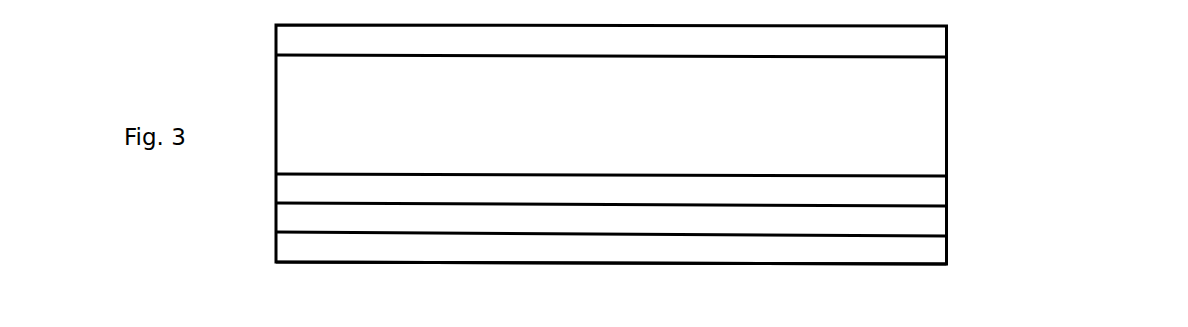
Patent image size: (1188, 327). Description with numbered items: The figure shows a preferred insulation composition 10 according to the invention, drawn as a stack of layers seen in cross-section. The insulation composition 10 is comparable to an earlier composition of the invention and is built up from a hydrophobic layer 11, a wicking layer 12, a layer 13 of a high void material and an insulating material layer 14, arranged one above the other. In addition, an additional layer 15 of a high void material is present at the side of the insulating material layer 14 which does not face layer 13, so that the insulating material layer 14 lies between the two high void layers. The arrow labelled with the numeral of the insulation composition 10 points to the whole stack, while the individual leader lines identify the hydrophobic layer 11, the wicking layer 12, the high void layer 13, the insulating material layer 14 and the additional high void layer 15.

The insulation composition 10 is at (967, 110).
The hydrophobic layer 11 is at (885, 244).
The wicking layer 12 is at (885, 217).
The layer of a high void material 13 is at (885, 193).
The insulating material layer 14 is at (885, 147).
The additional layer of a high void material 15 is at (885, 41).